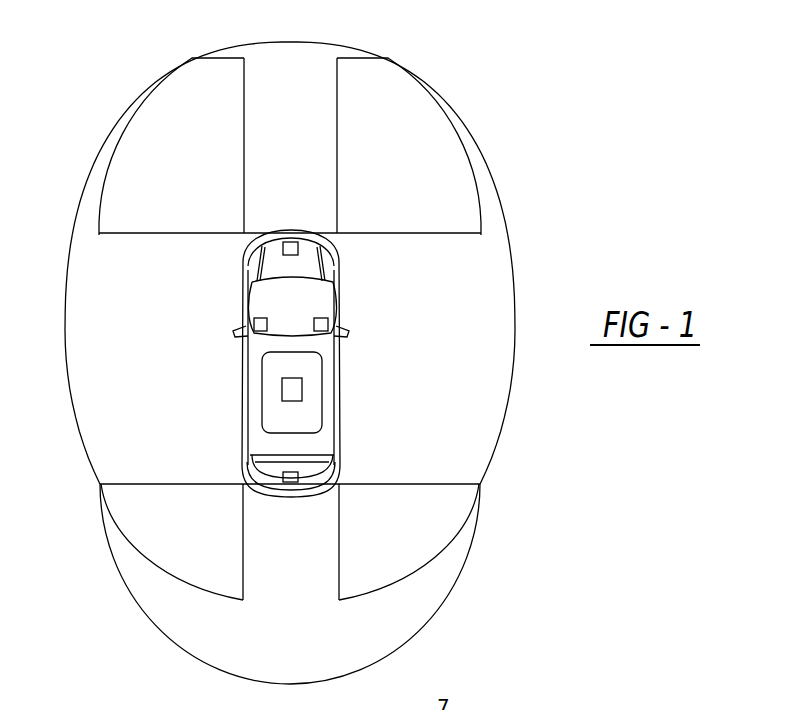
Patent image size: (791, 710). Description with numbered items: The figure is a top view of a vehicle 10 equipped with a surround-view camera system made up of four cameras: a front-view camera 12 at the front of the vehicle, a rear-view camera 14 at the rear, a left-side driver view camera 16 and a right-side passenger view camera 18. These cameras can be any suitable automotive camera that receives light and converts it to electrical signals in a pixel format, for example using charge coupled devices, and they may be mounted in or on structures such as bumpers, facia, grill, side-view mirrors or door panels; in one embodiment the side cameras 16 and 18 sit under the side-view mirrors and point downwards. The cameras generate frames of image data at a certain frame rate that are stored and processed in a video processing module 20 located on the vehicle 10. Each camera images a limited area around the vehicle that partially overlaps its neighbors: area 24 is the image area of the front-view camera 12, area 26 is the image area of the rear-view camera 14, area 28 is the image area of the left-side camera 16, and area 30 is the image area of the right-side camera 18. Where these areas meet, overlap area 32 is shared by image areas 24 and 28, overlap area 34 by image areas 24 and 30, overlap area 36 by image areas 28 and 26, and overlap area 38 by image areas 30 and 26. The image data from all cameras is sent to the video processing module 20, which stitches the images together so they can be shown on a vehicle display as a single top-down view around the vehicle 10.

The vehicle 10 is at (556, 161).
The front-view camera 12 is at (291, 240).
The rear-view camera 14 is at (292, 483).
The left-side driver view camera 16 is at (253, 322).
The right-side passenger view camera 18 is at (328, 322).
The video processing module 20 is at (282, 388).
The image area 24 is at (300, 63).
The image area 26 is at (283, 650).
The image area 28 is at (95, 373).
The image area 30 is at (465, 408).
The overlap area 32 is at (160, 152).
The overlap area 34 is at (424, 128).
The overlap area 36 is at (173, 537).
The overlap area 38 is at (387, 562).